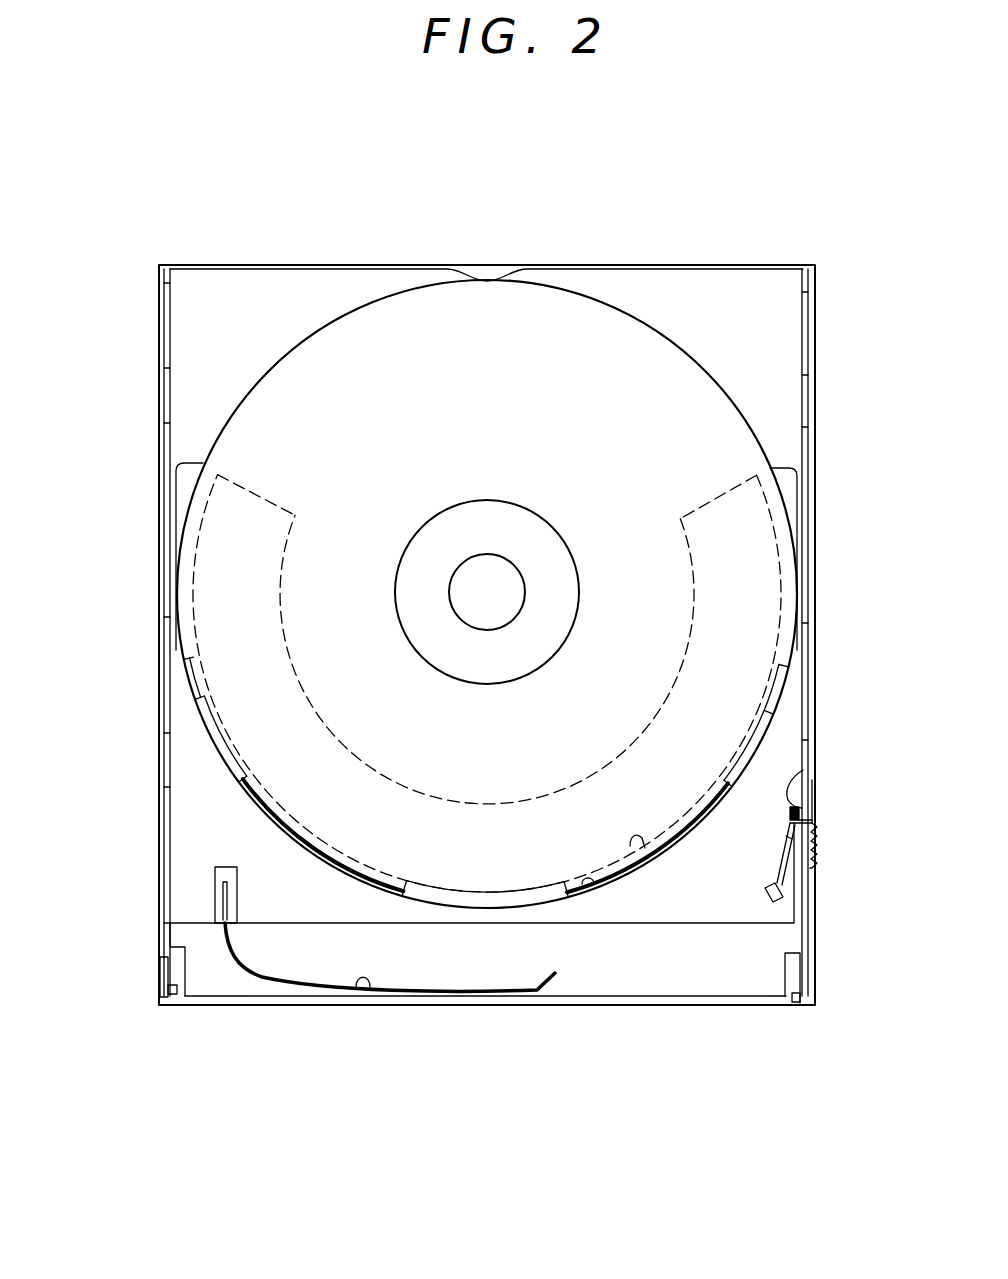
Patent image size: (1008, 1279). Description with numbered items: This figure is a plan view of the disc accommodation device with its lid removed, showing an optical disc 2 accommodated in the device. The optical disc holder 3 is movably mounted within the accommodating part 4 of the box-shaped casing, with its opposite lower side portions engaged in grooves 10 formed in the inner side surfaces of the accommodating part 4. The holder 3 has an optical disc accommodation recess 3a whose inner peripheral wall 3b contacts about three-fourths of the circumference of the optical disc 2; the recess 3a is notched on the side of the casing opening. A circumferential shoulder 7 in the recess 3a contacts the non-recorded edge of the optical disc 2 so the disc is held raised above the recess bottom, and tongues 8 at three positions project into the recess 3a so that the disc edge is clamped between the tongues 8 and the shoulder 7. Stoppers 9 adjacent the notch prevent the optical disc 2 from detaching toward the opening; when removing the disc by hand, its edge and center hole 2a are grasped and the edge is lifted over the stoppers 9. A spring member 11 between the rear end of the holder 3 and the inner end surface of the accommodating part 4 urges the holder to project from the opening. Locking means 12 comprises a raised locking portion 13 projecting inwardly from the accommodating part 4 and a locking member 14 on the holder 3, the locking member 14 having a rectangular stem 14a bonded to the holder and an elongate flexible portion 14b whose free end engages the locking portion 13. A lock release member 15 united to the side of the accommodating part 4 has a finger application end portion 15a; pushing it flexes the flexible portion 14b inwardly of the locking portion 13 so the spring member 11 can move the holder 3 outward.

The optical disc 2 is at (608, 312).
The center hole 2a is at (486, 554).
The optical disc holder 3 is at (263, 498).
The optical disc accommodation recess 3a is at (232, 658).
The inner peripheral wall 3b is at (588, 884).
The accommodating part 4 is at (815, 268).
The circumferential shoulder 7 is at (630, 846).
The tongues 8 is at (230, 753).
The stoppers 9 is at (186, 482).
The grooves 10 is at (172, 337).
The spring member 11 is at (370, 990).
The locking means 12 is at (828, 783).
The locking portion 13 is at (803, 738).
The locking member 14 is at (758, 915).
The stem 14a is at (774, 900).
The flexible portion 14b is at (788, 838).
The lock release member 15 is at (830, 870).
The finger application end portion 15a is at (813, 830).